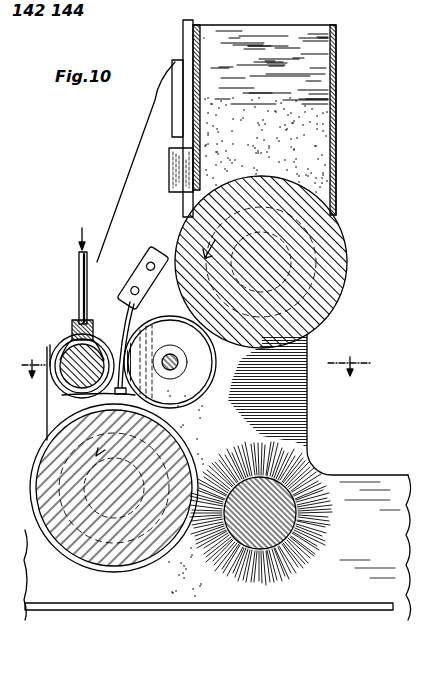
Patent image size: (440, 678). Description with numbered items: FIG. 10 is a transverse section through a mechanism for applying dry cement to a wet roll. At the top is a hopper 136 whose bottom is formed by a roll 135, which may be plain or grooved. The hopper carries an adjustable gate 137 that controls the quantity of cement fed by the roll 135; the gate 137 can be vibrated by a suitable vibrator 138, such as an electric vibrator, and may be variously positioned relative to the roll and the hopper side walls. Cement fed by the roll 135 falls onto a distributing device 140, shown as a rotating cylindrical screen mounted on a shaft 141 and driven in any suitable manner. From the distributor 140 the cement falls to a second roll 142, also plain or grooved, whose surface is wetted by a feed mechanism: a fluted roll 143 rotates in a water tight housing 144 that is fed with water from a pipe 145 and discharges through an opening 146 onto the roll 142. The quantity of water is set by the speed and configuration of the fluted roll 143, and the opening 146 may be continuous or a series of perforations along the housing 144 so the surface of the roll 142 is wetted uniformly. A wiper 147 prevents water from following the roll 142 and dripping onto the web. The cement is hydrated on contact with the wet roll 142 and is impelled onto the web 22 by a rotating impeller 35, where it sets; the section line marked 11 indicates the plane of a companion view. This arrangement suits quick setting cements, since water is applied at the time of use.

The hopper 136 is at (337, 95).
The adjustable gate 137 is at (200, 30).
The vibrator 138 is at (169, 165).
The roll 135 is at (328, 236).
The pipe 145 is at (88, 270).
The fluted roll 143 is at (62, 350).
The water tight housing 144 is at (64, 345).
The distributing device 140 is at (248, 345).
The shaft 141 is at (178, 363).
The roll 142 is at (168, 446).
The opening 146 is at (98, 403).
The wiper 147 is at (44, 584).
The rotating impeller 35 is at (275, 470).
The web 22 is at (236, 610).
The section line 11 is at (196, 379).